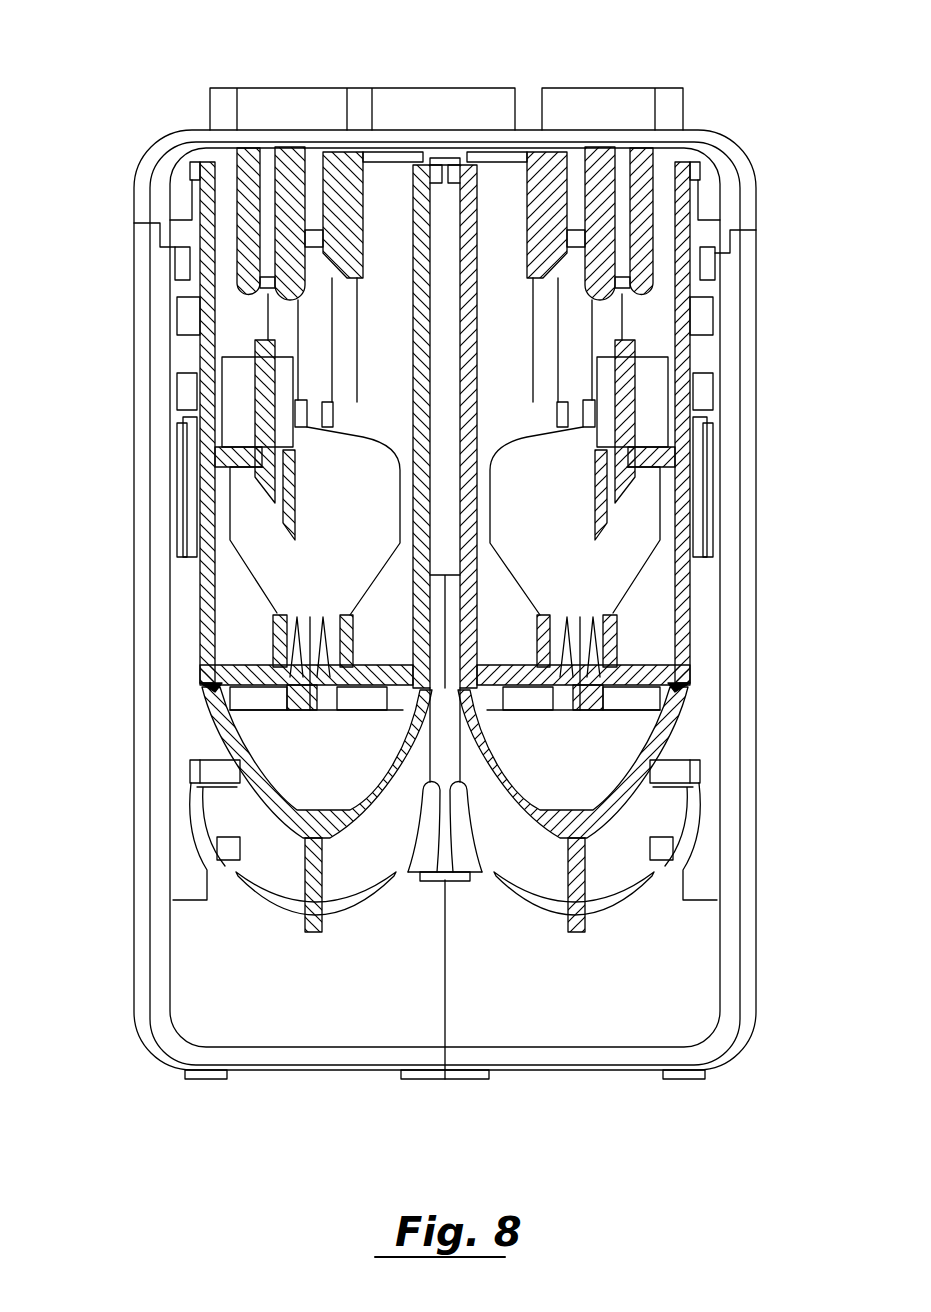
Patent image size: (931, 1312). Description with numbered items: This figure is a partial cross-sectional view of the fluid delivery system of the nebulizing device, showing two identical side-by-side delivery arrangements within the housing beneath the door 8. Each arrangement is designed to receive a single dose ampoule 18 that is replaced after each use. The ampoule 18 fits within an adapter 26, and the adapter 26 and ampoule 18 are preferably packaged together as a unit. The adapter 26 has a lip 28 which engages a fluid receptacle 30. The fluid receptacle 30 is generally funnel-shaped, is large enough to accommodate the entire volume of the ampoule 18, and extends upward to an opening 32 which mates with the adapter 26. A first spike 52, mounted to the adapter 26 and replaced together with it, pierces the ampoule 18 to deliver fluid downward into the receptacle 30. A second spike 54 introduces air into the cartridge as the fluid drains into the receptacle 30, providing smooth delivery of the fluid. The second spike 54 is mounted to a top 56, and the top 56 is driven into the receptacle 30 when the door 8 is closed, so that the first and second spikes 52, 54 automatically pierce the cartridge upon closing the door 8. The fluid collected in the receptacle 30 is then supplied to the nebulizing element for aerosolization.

The door 8 is at (577, 110).
The ampoule 18 is at (257, 540).
The adapter 26 is at (210, 350).
The lip 28 is at (233, 697).
The fluid receptacle 30 is at (630, 800).
The opening 32 is at (680, 683).
The first spike 52 is at (320, 622).
The second spike 54 is at (293, 497).
The top 56 is at (344, 175).